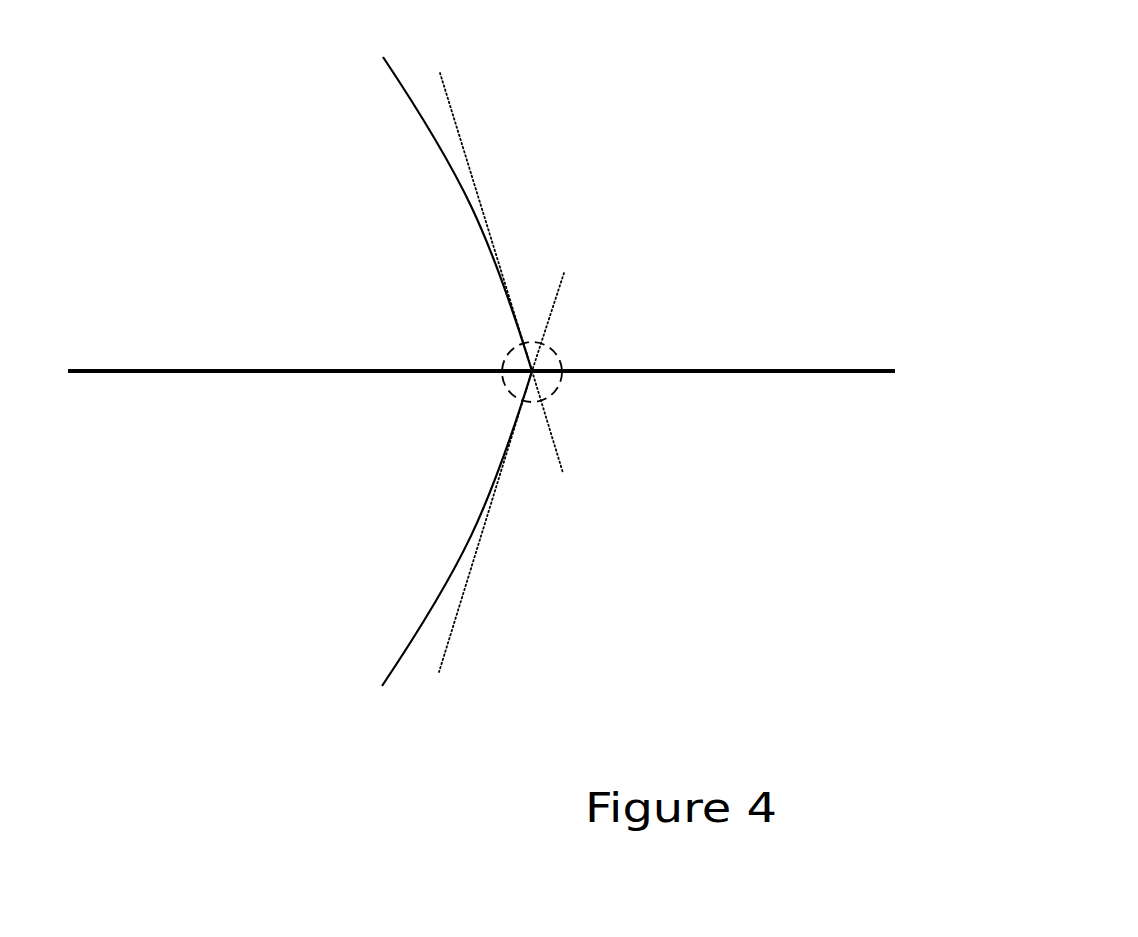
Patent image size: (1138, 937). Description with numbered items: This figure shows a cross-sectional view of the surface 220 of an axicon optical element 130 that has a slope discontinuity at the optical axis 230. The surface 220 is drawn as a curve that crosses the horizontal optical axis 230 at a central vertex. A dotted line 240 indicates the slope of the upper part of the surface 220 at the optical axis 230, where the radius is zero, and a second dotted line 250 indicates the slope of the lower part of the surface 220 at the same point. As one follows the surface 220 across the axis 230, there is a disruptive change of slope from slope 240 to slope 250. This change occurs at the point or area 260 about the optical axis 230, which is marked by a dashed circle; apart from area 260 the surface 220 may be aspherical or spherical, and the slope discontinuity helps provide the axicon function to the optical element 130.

The optical element 130 is at (397, 359).
The surface 220 is at (397, 75).
The optical axis 230 is at (722, 371).
The line showing slope of upper part of surface 240 is at (452, 113).
The line showing slope of lower part of surface 250 is at (455, 615).
The area about optical axis 260 is at (557, 353).